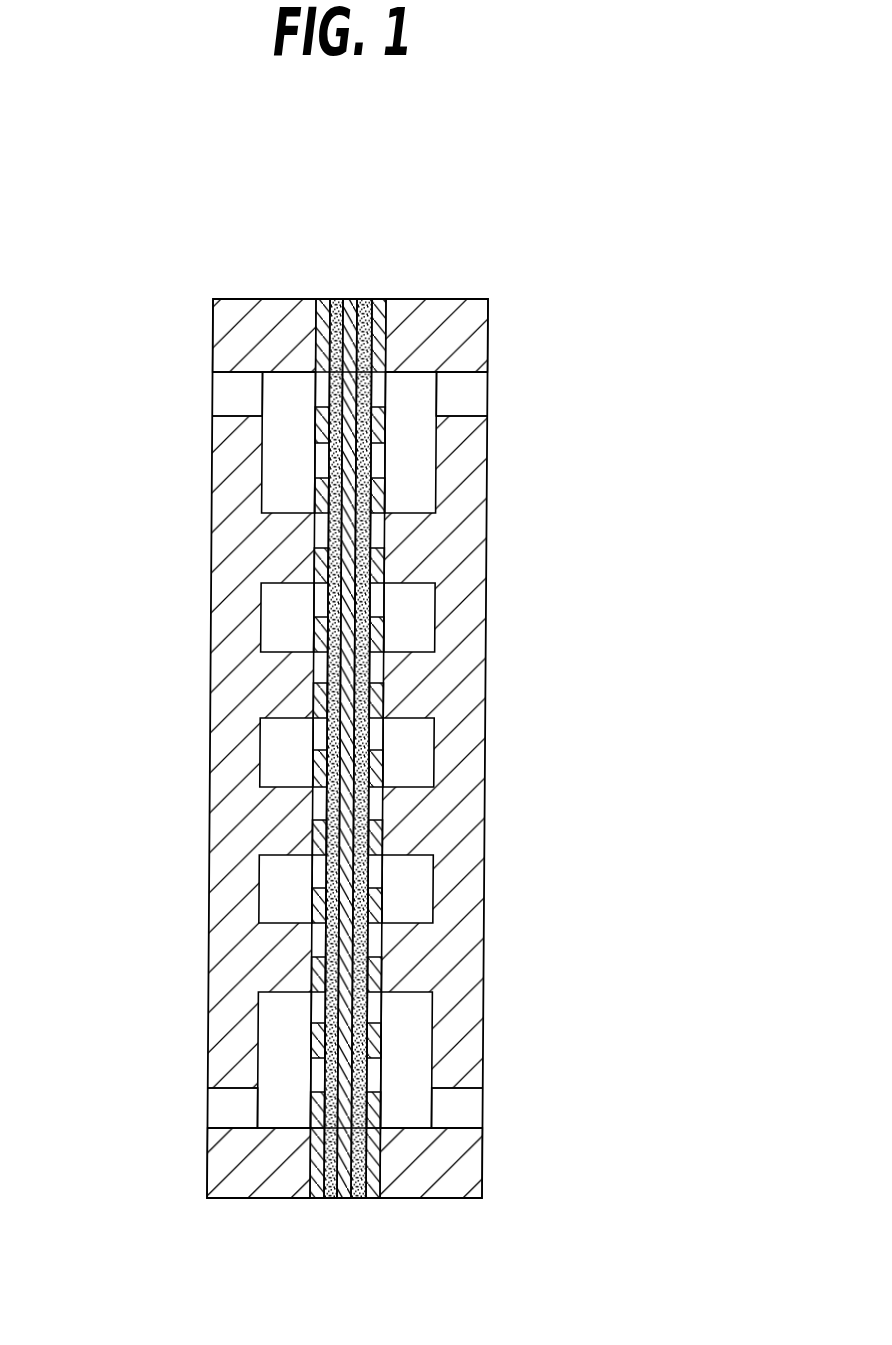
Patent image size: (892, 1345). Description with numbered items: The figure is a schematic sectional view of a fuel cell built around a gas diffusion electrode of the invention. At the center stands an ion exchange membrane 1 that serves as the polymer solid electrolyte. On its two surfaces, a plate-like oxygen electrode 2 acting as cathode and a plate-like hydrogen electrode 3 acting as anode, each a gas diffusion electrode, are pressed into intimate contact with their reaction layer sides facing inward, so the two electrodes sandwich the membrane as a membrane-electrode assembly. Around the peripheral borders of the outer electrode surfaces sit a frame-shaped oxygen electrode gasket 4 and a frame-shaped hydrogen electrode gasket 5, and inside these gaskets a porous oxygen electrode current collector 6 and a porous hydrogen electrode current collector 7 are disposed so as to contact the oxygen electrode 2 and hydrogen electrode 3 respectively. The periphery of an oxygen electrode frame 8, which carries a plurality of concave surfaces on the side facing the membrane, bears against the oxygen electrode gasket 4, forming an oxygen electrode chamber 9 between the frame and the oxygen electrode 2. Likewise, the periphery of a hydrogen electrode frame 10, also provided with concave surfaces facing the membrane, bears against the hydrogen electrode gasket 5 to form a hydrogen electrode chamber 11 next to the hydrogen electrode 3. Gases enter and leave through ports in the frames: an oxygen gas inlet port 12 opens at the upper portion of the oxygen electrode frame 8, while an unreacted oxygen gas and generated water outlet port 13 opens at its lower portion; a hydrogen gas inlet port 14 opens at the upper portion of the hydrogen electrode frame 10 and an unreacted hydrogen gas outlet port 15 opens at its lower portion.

The ion exchange membrane 1 is at (350, 303).
The oxygen electrode 2 is at (360, 1200).
The hydrogen electrode 3 is at (328, 1200).
The oxygen electrode gasket 4 is at (378, 303).
The hydrogen electrode gasket 5 is at (327, 303).
The oxygen electrode current collector 6 is at (372, 497).
The hydrogen electrode current collector 7 is at (330, 503).
The oxygen electrode frame 8 is at (452, 678).
The oxygen electrode chamber 9 is at (403, 618).
The hydrogen electrode frame 10 is at (240, 798).
The hydrogen electrode chamber 11 is at (272, 890).
The oxygen gas inlet port 12 is at (460, 393).
The unreacted oxygen gas and generated water outlet port 13 is at (458, 1103).
The hydrogen gas inlet port 14 is at (243, 407).
The unreacted hydrogen gas outlet port 15 is at (225, 1110).